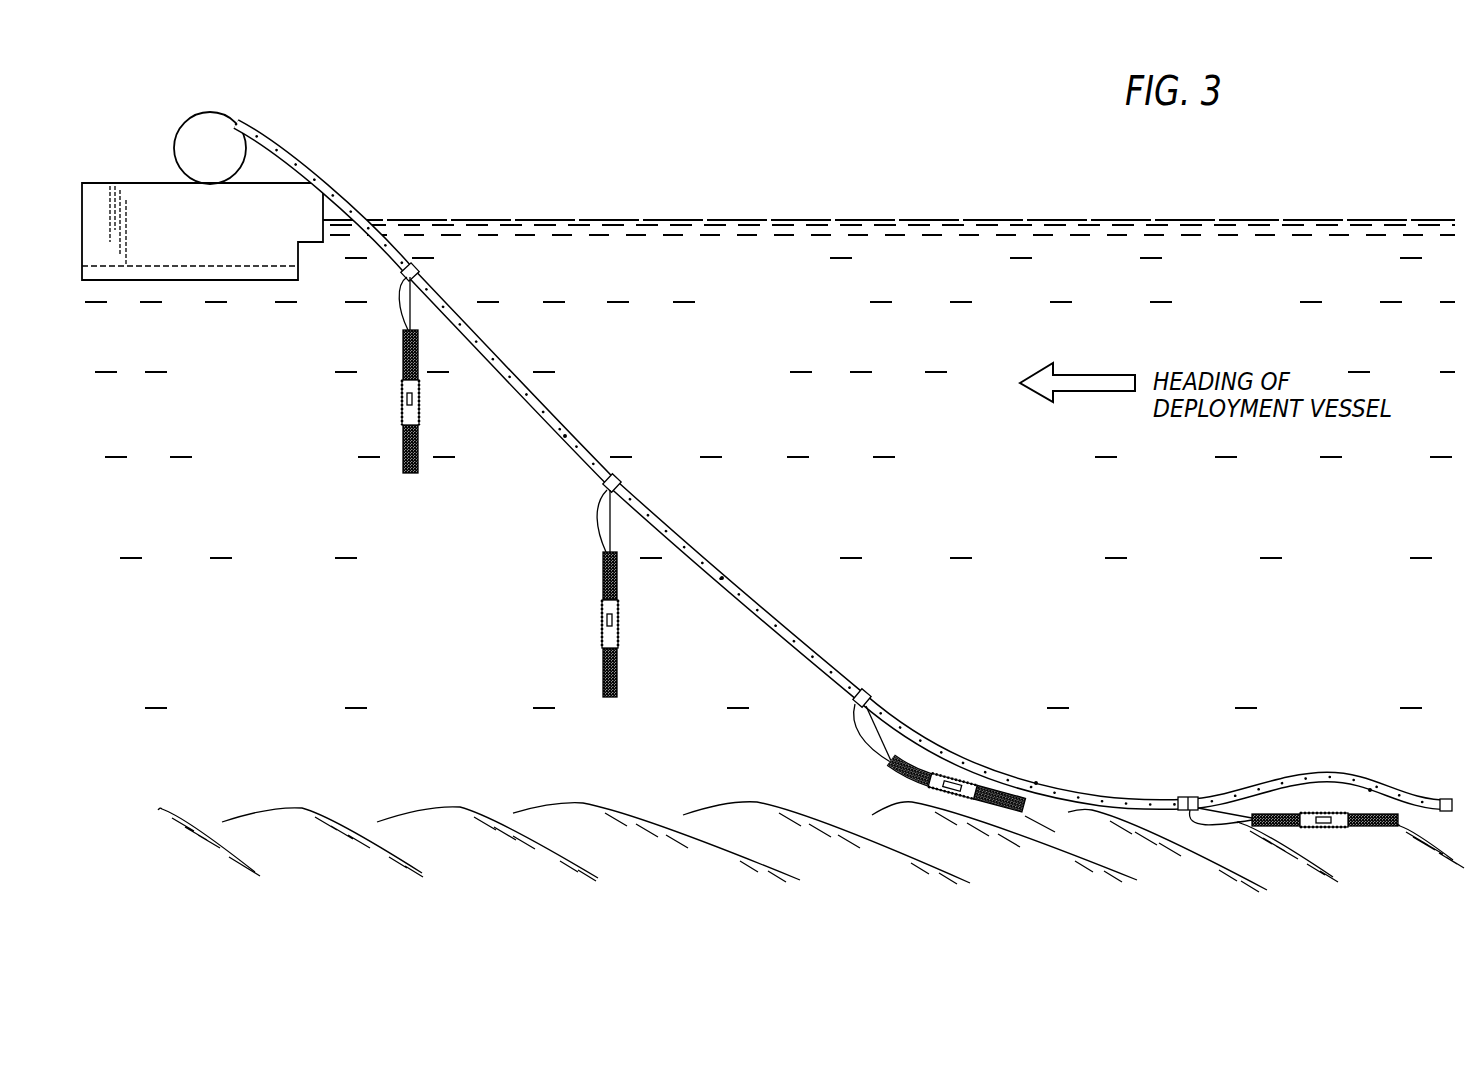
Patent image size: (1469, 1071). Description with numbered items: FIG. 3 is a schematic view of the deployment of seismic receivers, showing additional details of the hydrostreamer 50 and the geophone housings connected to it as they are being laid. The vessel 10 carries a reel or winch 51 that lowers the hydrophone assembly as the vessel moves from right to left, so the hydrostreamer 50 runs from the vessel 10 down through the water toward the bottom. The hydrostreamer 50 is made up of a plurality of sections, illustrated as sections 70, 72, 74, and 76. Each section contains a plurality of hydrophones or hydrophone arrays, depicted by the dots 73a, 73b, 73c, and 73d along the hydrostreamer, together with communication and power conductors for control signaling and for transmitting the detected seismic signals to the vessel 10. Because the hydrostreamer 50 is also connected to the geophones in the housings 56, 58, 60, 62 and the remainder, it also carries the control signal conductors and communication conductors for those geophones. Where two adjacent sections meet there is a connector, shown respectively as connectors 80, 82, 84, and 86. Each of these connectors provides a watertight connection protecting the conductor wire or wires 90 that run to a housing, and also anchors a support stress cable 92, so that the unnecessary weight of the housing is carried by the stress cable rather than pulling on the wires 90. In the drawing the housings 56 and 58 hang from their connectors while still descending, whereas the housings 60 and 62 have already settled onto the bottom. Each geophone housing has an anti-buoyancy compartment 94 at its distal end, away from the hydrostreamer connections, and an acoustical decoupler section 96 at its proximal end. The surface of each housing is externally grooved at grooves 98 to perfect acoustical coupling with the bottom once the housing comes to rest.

The vessel 10 is at (275, 253).
The hydrostreamer 50 is at (844, 467).
The reel or winch 51 is at (197, 117).
The geophone housing 56 is at (400, 402).
The geophone housing 58 is at (583, 645).
The geophone housing 60 is at (956, 789).
The geophone housing 62 is at (1340, 835).
The hydrostreamer section 70 is at (568, 432).
The hydrostreamer section 72 is at (730, 590).
The hydrostreamer section 74 is at (947, 738).
The hydrostreamer section 76 is at (1275, 783).
The hydrophones or hydrophone arrays 73a is at (571, 443).
The hydrophones or hydrophone arrays 73b is at (712, 582).
The hydrophones or hydrophone arrays 73c is at (1040, 783).
The hydrophones or hydrophone arrays 73d is at (1373, 788).
The connector 80 is at (427, 268).
The connector 82 is at (618, 484).
The connector 84 is at (864, 692).
The connector 86 is at (1192, 797).
The conductor wire 90 is at (403, 303).
The support stress cable 92 is at (417, 300).
The anti-buoyancy compartment 94 is at (974, 775).
The acoustical decoupler section 96 is at (893, 778).
The grooves 98 is at (963, 810).